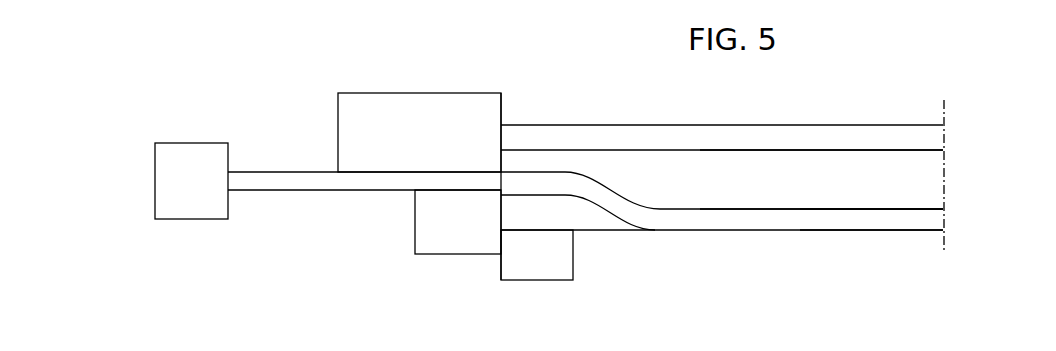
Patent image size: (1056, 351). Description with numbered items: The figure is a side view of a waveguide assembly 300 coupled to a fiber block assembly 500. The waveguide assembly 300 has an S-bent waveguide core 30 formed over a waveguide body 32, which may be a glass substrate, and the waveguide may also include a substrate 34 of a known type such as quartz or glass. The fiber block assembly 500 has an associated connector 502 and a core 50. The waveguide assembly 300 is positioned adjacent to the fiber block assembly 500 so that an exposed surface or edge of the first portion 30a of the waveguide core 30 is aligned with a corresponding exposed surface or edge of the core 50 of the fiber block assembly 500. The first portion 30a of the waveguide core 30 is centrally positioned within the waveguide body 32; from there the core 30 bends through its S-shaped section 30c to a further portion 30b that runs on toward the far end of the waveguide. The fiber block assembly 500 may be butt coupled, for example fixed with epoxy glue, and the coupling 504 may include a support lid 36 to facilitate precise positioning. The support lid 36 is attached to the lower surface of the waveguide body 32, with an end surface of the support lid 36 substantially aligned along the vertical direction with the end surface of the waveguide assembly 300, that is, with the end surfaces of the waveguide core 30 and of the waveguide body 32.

The fiber block assembly 500 is at (366, 83).
The connector 502 is at (192, 208).
The core 50 is at (275, 182).
The coupling 504 is at (437, 232).
The support lid 36 is at (535, 260).
The substrate 34 is at (622, 128).
The first portion of the waveguide core 30a is at (528, 183).
The transition section of shaft 30c is at (622, 206).
The second section of shaft 30b is at (888, 222).
The waveguide body 32 is at (923, 171).
The waveguide assembly 300 is at (933, 94).
The waveguide core 30 is at (952, 216).